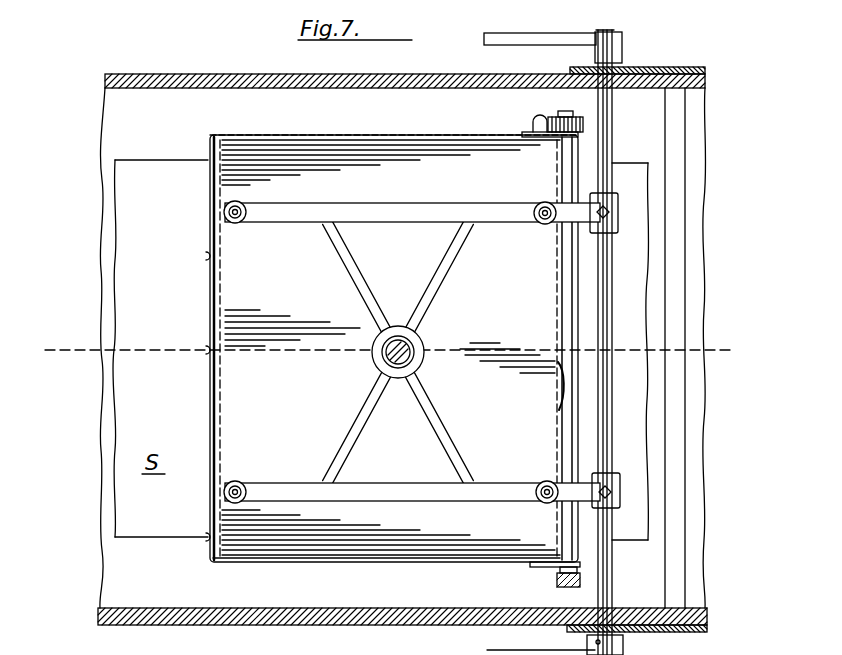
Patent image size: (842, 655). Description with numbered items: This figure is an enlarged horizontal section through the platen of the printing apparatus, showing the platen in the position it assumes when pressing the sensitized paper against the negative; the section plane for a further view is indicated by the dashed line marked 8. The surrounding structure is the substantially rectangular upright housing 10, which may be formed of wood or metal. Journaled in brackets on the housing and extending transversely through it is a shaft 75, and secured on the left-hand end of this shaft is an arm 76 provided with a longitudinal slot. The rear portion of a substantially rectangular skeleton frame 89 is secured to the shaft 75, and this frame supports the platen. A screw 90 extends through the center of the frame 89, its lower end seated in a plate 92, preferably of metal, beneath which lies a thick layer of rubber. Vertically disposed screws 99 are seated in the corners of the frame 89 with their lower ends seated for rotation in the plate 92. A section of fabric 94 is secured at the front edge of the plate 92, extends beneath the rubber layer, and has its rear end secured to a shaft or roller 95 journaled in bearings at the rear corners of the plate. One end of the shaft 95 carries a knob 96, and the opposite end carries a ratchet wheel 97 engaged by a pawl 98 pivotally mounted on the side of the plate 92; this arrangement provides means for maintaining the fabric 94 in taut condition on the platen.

The housing 10 is at (164, 635).
The section line 8- 8 is at (50, 372).
The shaft 75 is at (608, 575).
The arm 76 is at (512, 40).
The skeleton frame 89 is at (408, 209).
The screw 90 is at (395, 345).
The plate 92 is at (390, 543).
The fabric 94 is at (218, 418).
The shaft or roller 95 is at (558, 398).
The knob 96 is at (555, 588).
The ratchet wheel 97 is at (557, 118).
The pawl 98 is at (535, 128).
The screws 99 is at (238, 224).